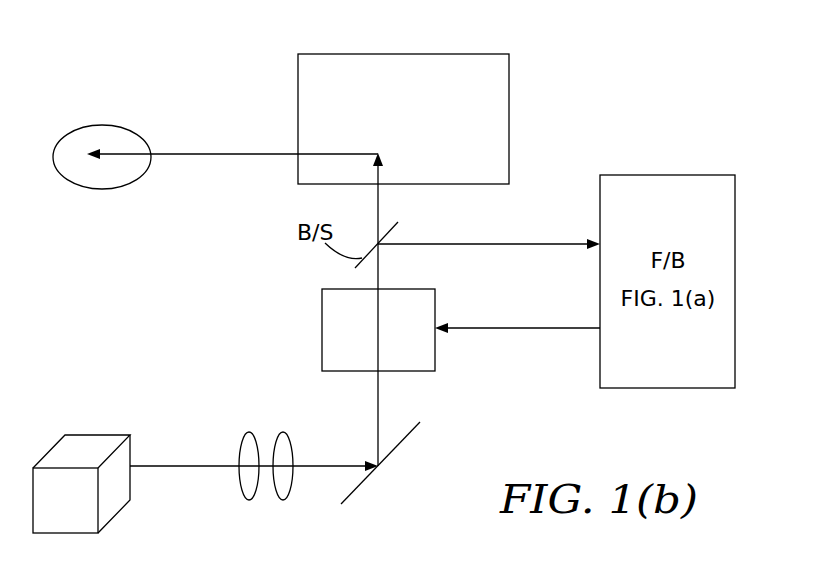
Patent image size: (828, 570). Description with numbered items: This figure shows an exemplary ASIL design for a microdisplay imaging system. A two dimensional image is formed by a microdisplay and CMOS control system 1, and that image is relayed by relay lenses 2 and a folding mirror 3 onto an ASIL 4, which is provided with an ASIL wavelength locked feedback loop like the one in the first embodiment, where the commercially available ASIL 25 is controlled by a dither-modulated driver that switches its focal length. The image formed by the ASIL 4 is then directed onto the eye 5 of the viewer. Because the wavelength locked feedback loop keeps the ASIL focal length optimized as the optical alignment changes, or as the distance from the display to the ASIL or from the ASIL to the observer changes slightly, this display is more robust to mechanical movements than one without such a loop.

The microdisplay and CMOS control system 1 is at (100, 432).
The relay lenses 2 is at (303, 427).
The folding mirror 3 is at (400, 447).
The ASIL 4 is at (105, 125).
The eye 5 is at (509, 115).
The ASIL 25 is at (322, 318).